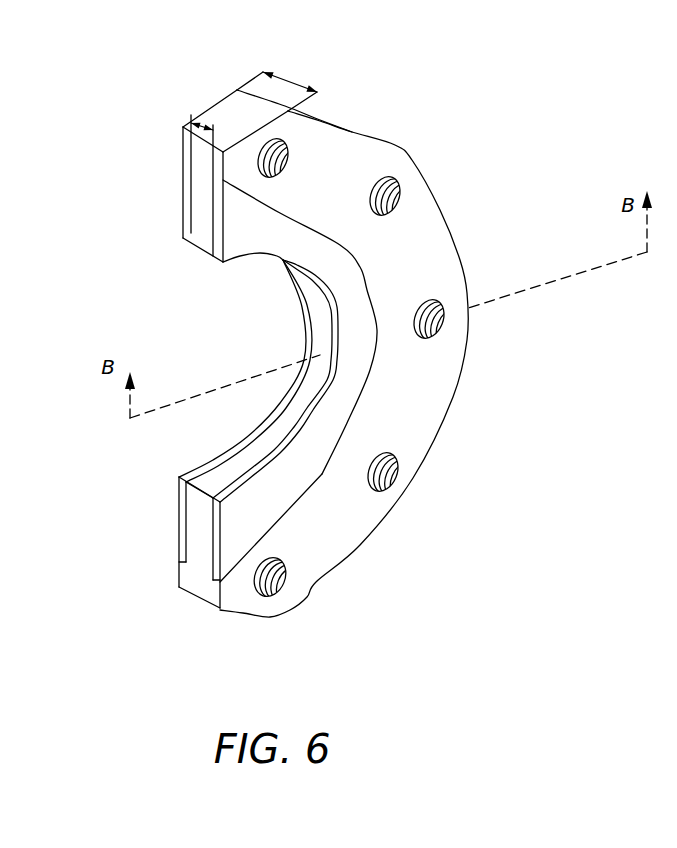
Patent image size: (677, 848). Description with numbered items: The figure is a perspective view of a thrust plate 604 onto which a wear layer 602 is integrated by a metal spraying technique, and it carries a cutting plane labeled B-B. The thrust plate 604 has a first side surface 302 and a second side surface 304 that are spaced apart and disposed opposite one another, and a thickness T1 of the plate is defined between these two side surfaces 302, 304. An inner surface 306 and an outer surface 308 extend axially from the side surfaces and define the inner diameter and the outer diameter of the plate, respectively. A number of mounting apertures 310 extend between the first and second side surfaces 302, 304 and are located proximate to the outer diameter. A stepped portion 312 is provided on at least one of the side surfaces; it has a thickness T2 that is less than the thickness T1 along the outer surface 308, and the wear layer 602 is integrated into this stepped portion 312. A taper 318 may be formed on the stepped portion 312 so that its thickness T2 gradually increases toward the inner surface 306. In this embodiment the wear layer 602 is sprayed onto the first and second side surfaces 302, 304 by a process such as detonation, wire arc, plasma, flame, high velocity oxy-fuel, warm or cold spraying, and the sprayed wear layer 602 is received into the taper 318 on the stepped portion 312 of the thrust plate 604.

The first side surface 302 is at (396, 282).
The second side surface 304 is at (209, 106).
The inner surface 306 is at (236, 474).
The outer surface 308 is at (472, 267).
The mounting apertures 310 is at (284, 155).
The stepped portion 312 is at (203, 192).
The taper 318 is at (190, 213).
The wear layer 602 is at (262, 427).
The thrust plate 604 is at (506, 122).
The thickness of the thrust plate T1 is at (298, 85).
The thickness of the stepped portion T2 is at (209, 105).